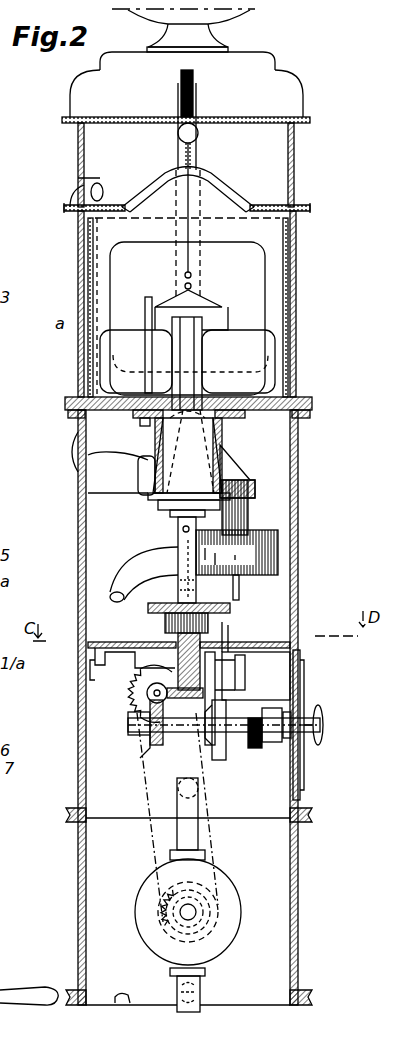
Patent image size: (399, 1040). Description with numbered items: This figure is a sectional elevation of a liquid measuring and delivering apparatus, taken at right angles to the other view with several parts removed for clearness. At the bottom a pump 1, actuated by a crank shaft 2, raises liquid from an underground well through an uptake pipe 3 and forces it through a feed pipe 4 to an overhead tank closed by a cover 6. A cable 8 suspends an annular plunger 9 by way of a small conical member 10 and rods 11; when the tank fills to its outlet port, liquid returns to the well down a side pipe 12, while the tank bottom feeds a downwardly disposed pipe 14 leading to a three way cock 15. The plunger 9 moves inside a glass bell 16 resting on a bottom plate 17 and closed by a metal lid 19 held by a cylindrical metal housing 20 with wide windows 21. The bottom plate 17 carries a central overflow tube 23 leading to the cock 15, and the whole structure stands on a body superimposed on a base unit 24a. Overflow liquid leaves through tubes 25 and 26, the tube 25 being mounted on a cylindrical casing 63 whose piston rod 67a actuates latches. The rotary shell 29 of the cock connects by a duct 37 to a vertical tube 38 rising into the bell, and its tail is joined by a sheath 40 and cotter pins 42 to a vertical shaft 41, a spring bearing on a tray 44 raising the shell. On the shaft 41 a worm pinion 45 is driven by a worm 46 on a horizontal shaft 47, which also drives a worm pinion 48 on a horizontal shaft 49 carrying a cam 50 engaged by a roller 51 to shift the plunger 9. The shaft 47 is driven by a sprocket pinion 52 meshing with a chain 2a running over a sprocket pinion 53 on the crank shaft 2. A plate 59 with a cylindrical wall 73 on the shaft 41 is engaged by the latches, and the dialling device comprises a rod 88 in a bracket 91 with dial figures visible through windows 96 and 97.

The pump 1 is at (135, 918).
The crank shaft 2 is at (205, 912).
The chain 2a is at (150, 850).
The uptake pipe 3 is at (205, 978).
The feed pipe 4 is at (178, 148).
The cover 6 is at (62, 119).
The cable 8 is at (198, 153).
The annular plunger 9 is at (140, 345).
The conical member 10 is at (190, 295).
The rods 11 is at (228, 315).
The pipe 12 is at (176, 134).
The downwardly disposed pipe 14 is at (97, 280).
The three way cock 15 is at (150, 415).
The glass bell 16 is at (90, 240).
The bottom plate 17 is at (305, 401).
The metal lid 19 is at (100, 175).
The cylindrical metal housing 20 is at (80, 223).
The windows 21 is at (110, 257).
The tube 23 is at (190, 340).
The base unit 24a is at (62, 936).
The tube 25 is at (250, 505).
The tube 26 is at (120, 573).
The rotary shell 29 is at (230, 462).
The duct 37 is at (96, 426).
The vertical tube 38 is at (145, 303).
The sheath 40 is at (178, 545).
The vertical shaft 41 is at (90, 643).
The cotter pins 42 is at (183, 530).
The tray 44 is at (165, 508).
The worm pinion 45 is at (110, 692).
The worm 46 is at (142, 713).
The horizontal shaft 47 is at (140, 730).
The worm pinion 48 is at (150, 758).
The horizontal shaft 49 is at (128, 740).
The cam 50 is at (262, 691).
The roller 51 is at (228, 624).
The sprocket pinion 52 is at (128, 707).
The sprocket pinion 53 is at (162, 890).
The plate 59 is at (148, 610).
The cylindrical casing 63 is at (278, 538).
The rod 67a is at (238, 586).
The cylindrical wall 73 is at (165, 628).
The rod 88 is at (300, 700).
The bracket 91 is at (262, 660).
The window 96 is at (300, 668).
The window 97 is at (300, 778).